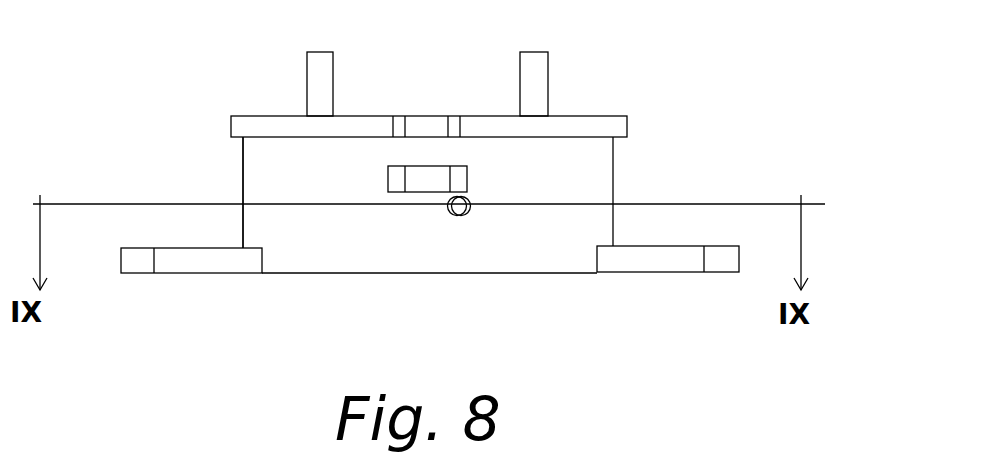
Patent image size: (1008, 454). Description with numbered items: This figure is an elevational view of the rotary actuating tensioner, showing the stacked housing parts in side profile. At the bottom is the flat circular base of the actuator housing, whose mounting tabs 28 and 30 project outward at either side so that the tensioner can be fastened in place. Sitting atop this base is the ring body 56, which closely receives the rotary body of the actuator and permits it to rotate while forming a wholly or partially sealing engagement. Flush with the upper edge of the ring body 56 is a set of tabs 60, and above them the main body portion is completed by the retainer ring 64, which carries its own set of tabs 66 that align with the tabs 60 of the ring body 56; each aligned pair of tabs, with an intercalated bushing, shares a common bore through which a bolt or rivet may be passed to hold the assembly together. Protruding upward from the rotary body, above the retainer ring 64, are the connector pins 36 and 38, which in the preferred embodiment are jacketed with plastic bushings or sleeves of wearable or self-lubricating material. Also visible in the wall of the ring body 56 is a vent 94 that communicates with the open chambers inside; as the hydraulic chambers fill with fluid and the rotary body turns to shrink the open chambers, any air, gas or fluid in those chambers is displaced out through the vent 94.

The mounting tab 28 is at (673, 260).
The mounting tab 30 is at (185, 263).
The connector pin 36 is at (322, 52).
The connector pin 38 is at (537, 52).
The ring body 56 is at (265, 183).
The tabs 60 is at (388, 180).
The retainer ring 64 is at (615, 122).
The tabs 66 is at (393, 127).
The vent 94 is at (455, 207).